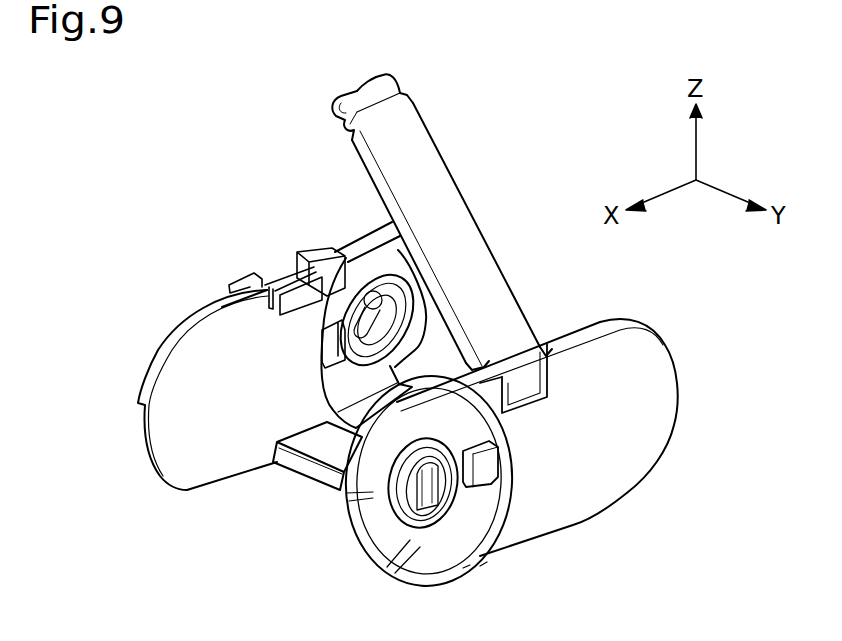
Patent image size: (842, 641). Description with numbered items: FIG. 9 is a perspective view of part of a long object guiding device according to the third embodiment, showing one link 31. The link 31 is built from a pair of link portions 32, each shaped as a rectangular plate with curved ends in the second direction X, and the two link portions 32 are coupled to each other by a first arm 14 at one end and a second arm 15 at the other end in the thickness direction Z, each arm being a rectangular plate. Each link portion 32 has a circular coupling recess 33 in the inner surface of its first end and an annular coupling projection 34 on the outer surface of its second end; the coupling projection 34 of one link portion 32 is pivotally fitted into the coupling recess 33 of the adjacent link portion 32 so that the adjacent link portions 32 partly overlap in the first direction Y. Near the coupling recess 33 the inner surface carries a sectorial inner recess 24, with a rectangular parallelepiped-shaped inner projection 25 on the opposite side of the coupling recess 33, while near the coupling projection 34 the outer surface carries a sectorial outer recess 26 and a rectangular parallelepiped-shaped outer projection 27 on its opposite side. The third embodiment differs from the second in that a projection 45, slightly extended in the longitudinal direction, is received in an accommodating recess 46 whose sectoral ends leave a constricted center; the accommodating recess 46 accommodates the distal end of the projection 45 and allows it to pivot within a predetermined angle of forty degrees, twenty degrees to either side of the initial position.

The first arm 14 is at (440, 143).
The second arm 15 is at (300, 478).
The inner recess 24 is at (422, 332).
The inner projection 25 is at (332, 355).
The outer recess 26 is at (367, 540).
The outer projection 27 is at (492, 462).
The link 31 is at (188, 318).
The link portion 32 is at (163, 345).
The coupling recess 33 is at (383, 290).
The coupling projection 34 is at (427, 518).
The projection 45 is at (437, 503).
The accommodating recess 46 is at (340, 253).